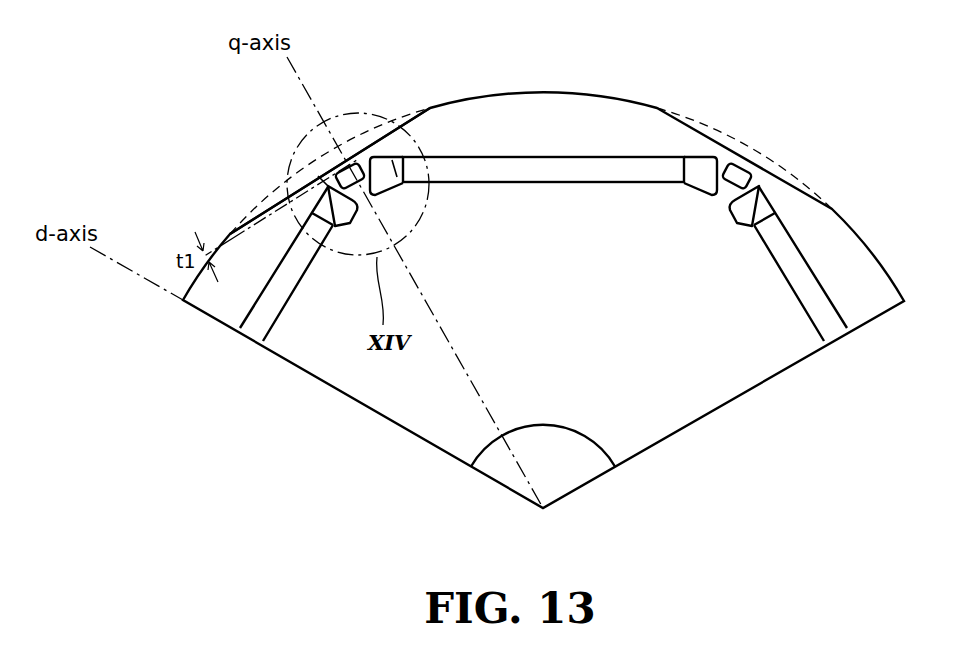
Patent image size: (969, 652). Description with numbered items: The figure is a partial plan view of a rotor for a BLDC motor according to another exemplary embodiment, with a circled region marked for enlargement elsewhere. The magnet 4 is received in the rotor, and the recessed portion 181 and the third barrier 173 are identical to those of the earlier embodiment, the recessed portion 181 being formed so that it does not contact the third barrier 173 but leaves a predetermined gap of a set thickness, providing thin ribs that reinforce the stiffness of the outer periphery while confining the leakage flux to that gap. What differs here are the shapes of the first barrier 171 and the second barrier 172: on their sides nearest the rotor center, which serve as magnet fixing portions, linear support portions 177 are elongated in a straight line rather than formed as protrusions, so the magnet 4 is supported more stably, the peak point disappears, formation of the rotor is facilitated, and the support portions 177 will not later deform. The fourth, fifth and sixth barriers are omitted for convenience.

The magnet 4 is at (550, 170).
The first barrier 171 is at (387, 178).
The second barrier 172 is at (343, 208).
The third barrier 173 is at (357, 160).
The linear support portion 177 is at (325, 182).
The recessed portion 181 is at (282, 202).